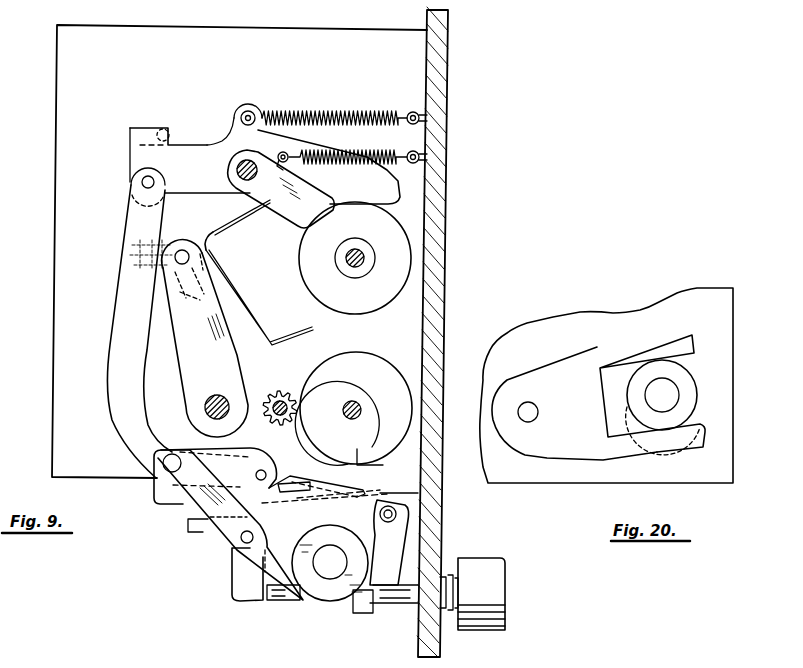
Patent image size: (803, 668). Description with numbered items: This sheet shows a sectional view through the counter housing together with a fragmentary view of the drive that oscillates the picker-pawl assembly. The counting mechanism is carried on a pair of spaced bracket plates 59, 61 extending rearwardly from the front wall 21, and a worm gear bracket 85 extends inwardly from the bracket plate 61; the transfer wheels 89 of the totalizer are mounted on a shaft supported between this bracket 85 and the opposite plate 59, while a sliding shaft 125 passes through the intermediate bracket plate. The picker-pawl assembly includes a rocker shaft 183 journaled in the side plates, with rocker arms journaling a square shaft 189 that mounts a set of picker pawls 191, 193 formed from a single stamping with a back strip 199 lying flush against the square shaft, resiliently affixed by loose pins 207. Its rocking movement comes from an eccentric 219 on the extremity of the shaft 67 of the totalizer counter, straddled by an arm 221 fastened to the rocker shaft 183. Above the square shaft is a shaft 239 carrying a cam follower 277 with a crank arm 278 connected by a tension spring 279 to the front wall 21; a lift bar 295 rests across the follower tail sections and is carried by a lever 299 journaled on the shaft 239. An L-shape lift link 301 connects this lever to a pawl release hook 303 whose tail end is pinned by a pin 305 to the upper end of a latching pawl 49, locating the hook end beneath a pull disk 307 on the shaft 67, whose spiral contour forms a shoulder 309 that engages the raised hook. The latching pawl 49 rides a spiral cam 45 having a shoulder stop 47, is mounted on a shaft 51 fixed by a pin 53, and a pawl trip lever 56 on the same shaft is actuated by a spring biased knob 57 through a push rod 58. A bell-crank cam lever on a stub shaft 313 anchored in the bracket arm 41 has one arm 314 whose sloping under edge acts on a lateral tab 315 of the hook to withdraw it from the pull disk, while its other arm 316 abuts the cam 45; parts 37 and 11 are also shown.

In FIG. 9, the bracket plate 61 is at (78, 75).
In FIG. 9, the front wall 21 is at (443, 291).
In FIG. 9, the tension spring 279 is at (322, 111).
In FIG. 9, the crank arm 278 is at (240, 113).
In FIG. 9, the cam follower 277 is at (400, 186).
In FIG. 9, the lever 299 is at (167, 155).
In FIG. 9, the lift bar 295 is at (164, 128).
In FIG. 9, the shaft 239 is at (240, 176).
In FIG. 9, the loose pin 207 is at (150, 262).
In FIG. 9, the L-shape lift link 301 is at (118, 404).
In FIG. 9, the worm gear bracket 85 is at (238, 365).
In FIG. 9, the rocker shaft 183 is at (213, 398).
In FIG. 20, the rocker shaft 183 is at (535, 416).
In FIG. 9, the square shaft 189 is at (205, 300).
In FIG. 9, the picker pawl 191 is at (243, 216).
In FIG. 9, the back strip 199 is at (206, 245).
In FIG. 9, the picker pawl 193 is at (262, 330).
In FIG. 9, the shaft 125 is at (364, 262).
In FIG. 9, the pull disk 307 is at (356, 409).
In FIG. 9, the shoulder 309 is at (378, 458).
In FIG. 9, the shaft 67 is at (348, 406).
In FIG. 9, the transfer wheel 89 is at (272, 422).
In FIG. 9, the pin 305 is at (172, 454).
In FIG. 9, the pawl release hook 303 is at (335, 478).
In FIG. 9, the lateral tab 315 is at (282, 492).
In FIG. 9, the cam lever arm 314 is at (333, 494).
In FIG. 9, the latching pawl 49 is at (260, 563).
In FIG. 9, the shaft 51 is at (240, 538).
In FIG. 9, the pawl trip lever 56 is at (240, 603).
In FIG. 9, the shoulder stop 47 is at (287, 602).
In FIG. 9, the wheel 37 is at (330, 575).
In FIG. 9, the cam 45 is at (348, 600).
In FIG. 9, the push rod 58 is at (398, 597).
In FIG. 9, the pin 53 is at (263, 533).
In FIG. 9, the frame member 11 is at (290, 554).
In FIG. 9, the bracket arm 41 is at (423, 533).
In FIG. 9, the stub shaft 313 is at (398, 512).
In FIG. 9, the cam lever arm 316 is at (395, 556).
In FIG. 9, the spring biased knob 57 is at (500, 575).
In FIG. 20, the bracket plate 59 is at (648, 476).
In FIG. 20, the arm 221 is at (600, 352).
In FIG. 20, the eccentric 219 is at (695, 388).